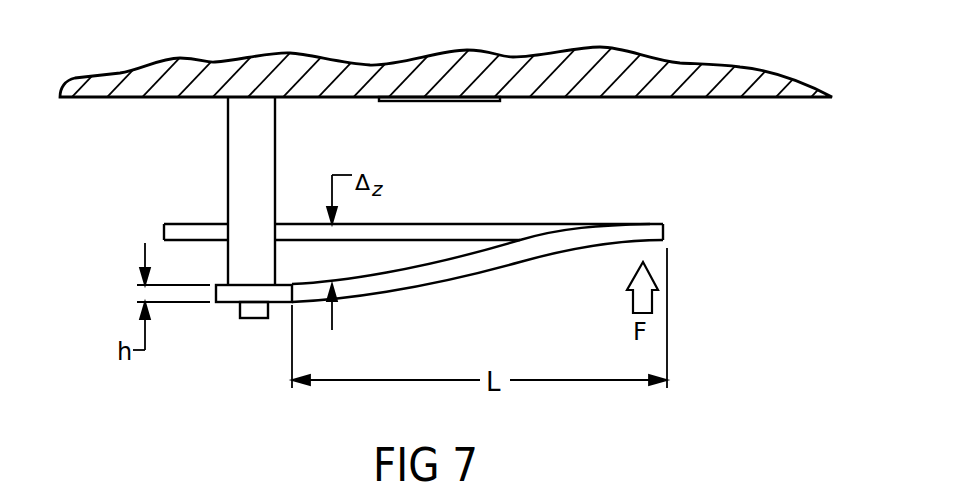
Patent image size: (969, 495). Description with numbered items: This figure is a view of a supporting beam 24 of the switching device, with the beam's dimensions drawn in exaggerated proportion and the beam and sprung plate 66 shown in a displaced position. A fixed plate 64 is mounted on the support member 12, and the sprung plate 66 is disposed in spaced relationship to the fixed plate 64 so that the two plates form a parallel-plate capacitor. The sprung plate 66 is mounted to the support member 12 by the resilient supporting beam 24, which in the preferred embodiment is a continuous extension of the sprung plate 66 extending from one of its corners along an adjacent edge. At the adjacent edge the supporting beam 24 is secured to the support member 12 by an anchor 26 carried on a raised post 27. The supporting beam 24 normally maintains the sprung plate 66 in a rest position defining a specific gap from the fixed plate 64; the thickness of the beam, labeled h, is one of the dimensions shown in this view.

The support member 12 is at (695, 97).
The fixed plate 64 is at (470, 101).
The raised post 27 is at (228, 175).
The anchor 26 is at (268, 318).
The sprung plate 66 is at (497, 223).
The supporting beam 24 is at (485, 273).